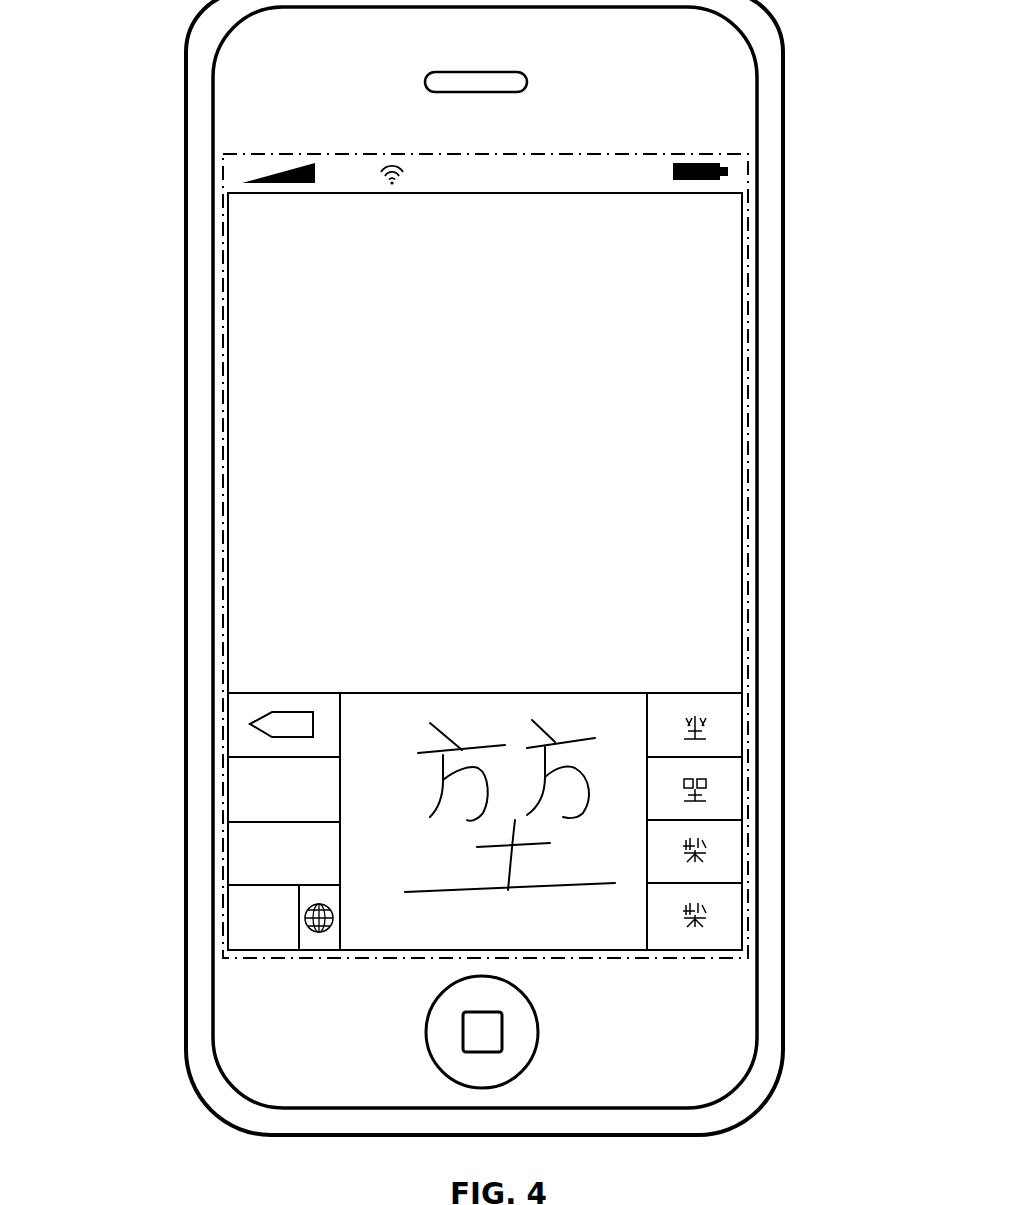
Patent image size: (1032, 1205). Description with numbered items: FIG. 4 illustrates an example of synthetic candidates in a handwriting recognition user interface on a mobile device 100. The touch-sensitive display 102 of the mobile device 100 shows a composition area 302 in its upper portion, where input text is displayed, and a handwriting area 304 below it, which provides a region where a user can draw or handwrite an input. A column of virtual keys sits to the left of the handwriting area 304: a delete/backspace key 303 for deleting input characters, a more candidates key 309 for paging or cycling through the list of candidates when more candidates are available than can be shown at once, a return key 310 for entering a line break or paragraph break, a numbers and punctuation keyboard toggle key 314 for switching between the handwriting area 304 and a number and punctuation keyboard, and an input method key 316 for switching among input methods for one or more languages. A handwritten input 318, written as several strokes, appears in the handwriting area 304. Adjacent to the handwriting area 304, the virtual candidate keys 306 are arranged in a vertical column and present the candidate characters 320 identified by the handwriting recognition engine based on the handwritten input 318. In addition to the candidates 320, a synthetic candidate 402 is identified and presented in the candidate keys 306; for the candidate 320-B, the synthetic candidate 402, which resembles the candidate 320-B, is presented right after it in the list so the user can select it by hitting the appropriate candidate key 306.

The mobile device 100 is at (783, 97).
The touch-sensitive display 102 is at (748, 172).
The composition area 302 is at (683, 248).
The delete/backspace key 303 is at (227, 730).
The handwriting area 304 is at (627, 946).
The virtual candidate keys 306 is at (742, 693).
The more candidates key 309 is at (227, 793).
The return key 310 is at (227, 856).
The numbers and punctuation keyboard toggle key 314 is at (227, 915).
The input method key 316 is at (313, 953).
The handwritten input 318 is at (474, 710).
The candidate characters 320 is at (712, 850).
The candidate 320-B is at (712, 727).
The synthetic candidate 402 is at (712, 790).